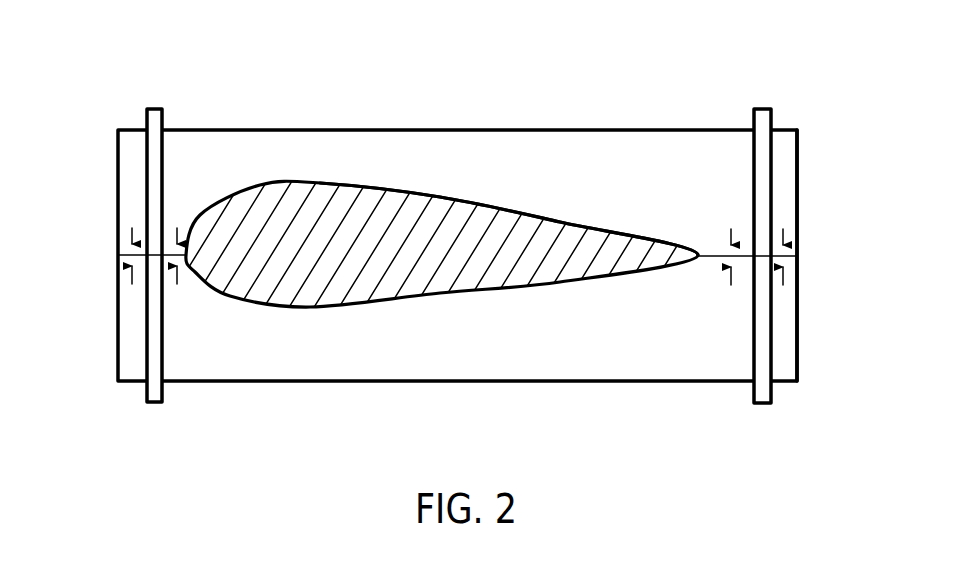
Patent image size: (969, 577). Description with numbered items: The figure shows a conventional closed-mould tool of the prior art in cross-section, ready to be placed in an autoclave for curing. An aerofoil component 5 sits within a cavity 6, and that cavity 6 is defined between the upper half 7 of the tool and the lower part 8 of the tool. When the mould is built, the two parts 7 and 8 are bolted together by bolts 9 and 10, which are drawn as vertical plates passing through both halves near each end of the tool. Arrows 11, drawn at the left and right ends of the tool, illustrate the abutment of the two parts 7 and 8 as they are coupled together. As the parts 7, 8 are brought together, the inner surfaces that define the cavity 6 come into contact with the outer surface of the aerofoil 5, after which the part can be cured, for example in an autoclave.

The aerofoil component 5 is at (342, 202).
The cavity 6 is at (582, 227).
The upper half of the tool 7 is at (772, 172).
The lower part of the tool 8 is at (797, 320).
The bolt 9 is at (165, 111).
The bolt 10 is at (765, 117).
The arrows 11 is at (118, 275).